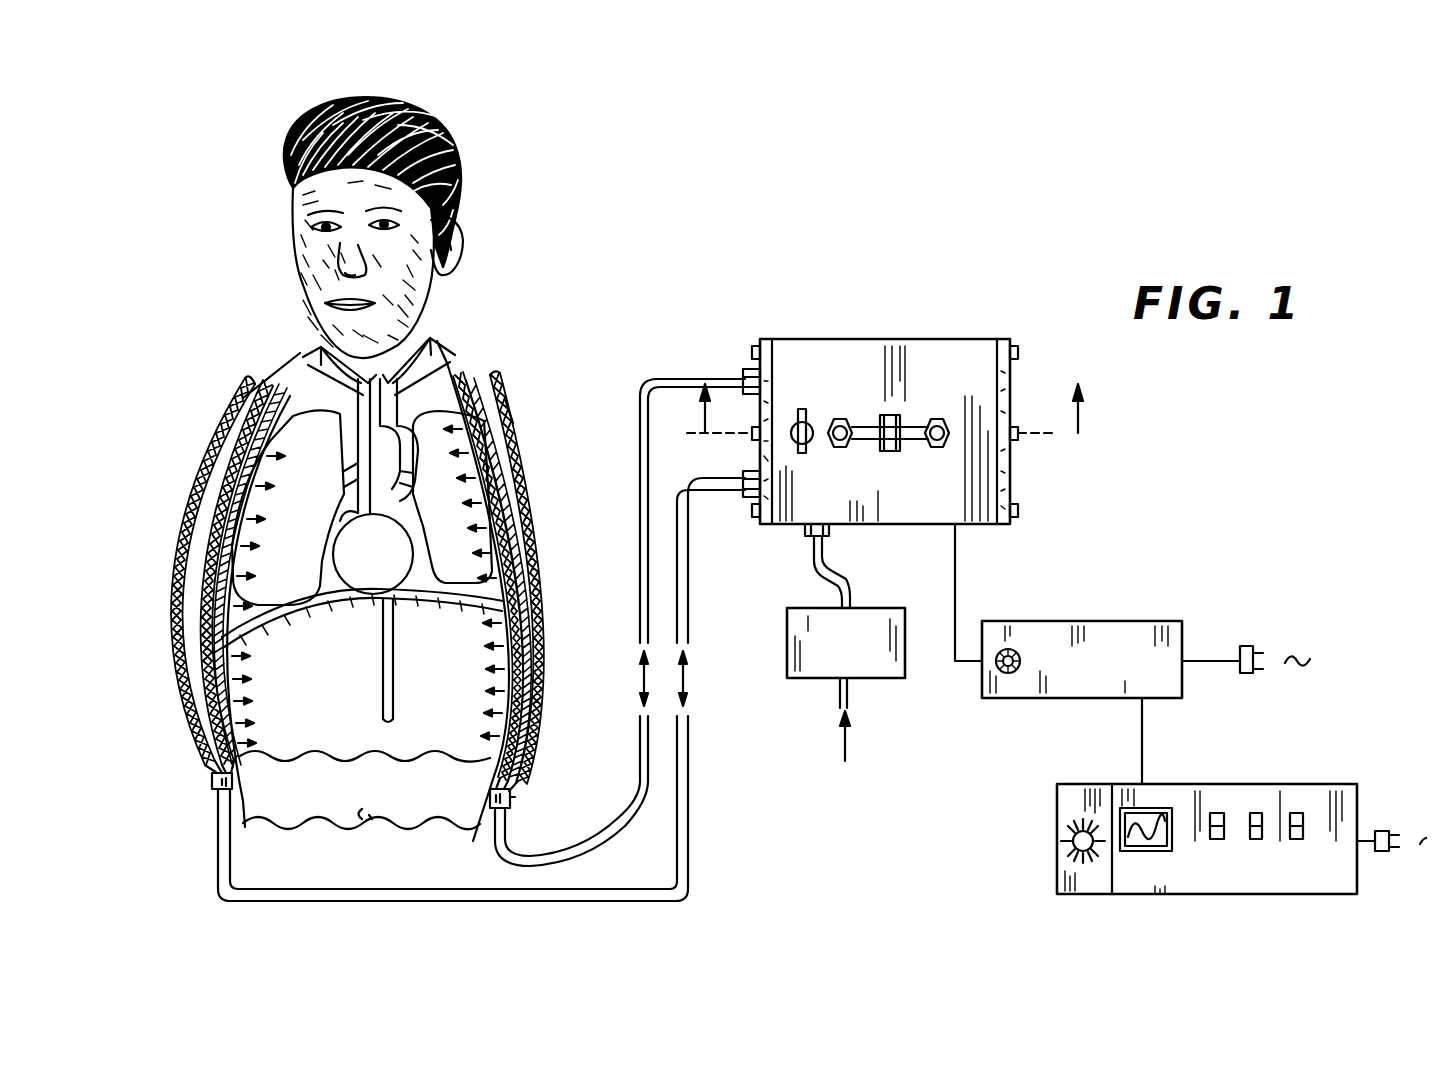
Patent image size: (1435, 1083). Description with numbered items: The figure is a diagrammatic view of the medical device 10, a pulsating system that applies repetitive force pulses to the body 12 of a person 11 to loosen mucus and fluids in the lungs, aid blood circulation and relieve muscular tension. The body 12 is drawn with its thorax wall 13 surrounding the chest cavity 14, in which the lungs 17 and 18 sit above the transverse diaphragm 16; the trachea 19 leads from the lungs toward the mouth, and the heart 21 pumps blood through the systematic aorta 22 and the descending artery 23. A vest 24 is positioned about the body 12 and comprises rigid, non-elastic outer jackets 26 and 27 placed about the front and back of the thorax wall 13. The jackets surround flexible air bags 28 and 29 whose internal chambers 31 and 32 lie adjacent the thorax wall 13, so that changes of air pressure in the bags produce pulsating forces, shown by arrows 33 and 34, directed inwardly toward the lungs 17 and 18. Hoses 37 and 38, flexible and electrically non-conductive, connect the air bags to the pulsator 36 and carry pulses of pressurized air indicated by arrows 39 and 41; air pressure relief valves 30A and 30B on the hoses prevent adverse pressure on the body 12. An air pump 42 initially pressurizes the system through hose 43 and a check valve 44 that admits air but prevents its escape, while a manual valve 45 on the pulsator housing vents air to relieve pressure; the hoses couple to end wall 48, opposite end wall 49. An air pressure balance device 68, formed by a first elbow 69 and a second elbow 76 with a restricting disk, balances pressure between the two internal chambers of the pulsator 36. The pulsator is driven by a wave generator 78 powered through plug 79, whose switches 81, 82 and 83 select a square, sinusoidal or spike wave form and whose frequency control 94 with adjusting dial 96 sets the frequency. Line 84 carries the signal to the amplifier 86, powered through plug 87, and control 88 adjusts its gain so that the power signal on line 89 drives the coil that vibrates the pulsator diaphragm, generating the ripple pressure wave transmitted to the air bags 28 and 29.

The medical device 10 is at (1057, 584).
The person 11 is at (317, 247).
The body 12 is at (325, 808).
The thorax wall 13 is at (489, 584).
The chest cavity 14 is at (231, 605).
The diaphragm 16 is at (362, 620).
The lung 17 is at (288, 507).
The lung 18 is at (452, 497).
The trachea 19 is at (417, 439).
The heart 21 is at (373, 552).
The systematic aorta 22 is at (336, 445).
The descending artery 23 is at (415, 660).
The vest 24 is at (547, 396).
The outer jacket 26 is at (522, 576).
The outer jacket 27 is at (190, 571).
The air bag 28 is at (265, 352).
The air bag 29 is at (511, 353).
The air pressure relief valve 30A is at (177, 778).
The air pressure relief valve 30B is at (542, 796).
The internal chamber 31 is at (201, 572).
The internal chamber 32 is at (541, 578).
The arrows 33 is at (267, 600).
The arrows 34 is at (467, 583).
The pulsator 36 is at (885, 405).
The hose 37 is at (620, 622).
The hose 38 is at (481, 689).
The arrows 39 is at (615, 678).
The arrows 41 is at (709, 678).
The air pump 42 is at (846, 684).
The hose 43 is at (857, 572).
The check valve 44 is at (789, 546).
The valve 45 is at (805, 404).
The end wall 48 is at (760, 405).
The end wall 49 is at (1005, 405).
The air pressure balance device 68 is at (926, 403).
The first elbow 69 is at (878, 454).
The second elbow 76 is at (926, 454).
The wave generator 78 is at (1207, 862).
The plug 79 is at (1392, 821).
The switch 81 is at (1199, 793).
The switch 82 is at (1249, 793).
The switch 83 is at (1313, 793).
The line 84 is at (1117, 741).
The amplifier 86 is at (1082, 635).
The power plug 87 is at (1246, 639).
The control 88 is at (1003, 691).
The line 89 is at (980, 592).
The wave frequency control 94 is at (1080, 865).
The adjusting dial 96 is at (1052, 841).